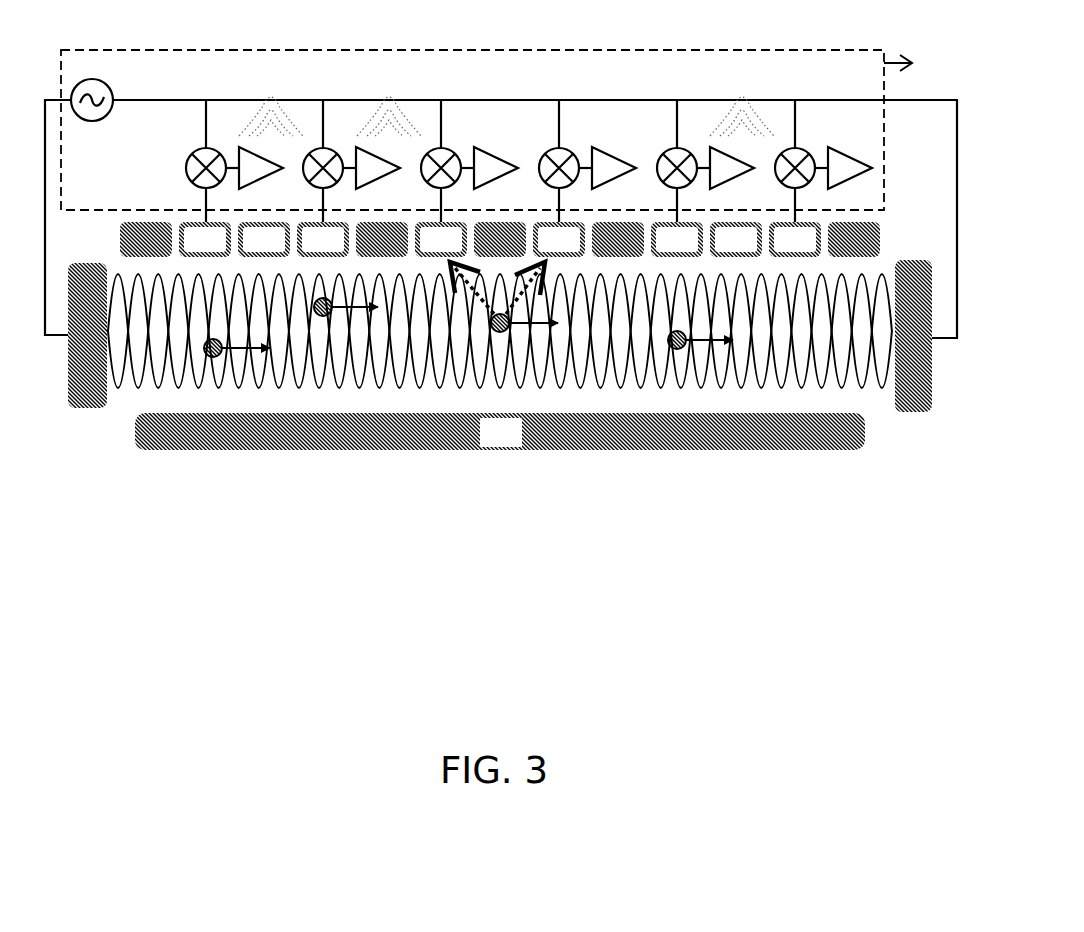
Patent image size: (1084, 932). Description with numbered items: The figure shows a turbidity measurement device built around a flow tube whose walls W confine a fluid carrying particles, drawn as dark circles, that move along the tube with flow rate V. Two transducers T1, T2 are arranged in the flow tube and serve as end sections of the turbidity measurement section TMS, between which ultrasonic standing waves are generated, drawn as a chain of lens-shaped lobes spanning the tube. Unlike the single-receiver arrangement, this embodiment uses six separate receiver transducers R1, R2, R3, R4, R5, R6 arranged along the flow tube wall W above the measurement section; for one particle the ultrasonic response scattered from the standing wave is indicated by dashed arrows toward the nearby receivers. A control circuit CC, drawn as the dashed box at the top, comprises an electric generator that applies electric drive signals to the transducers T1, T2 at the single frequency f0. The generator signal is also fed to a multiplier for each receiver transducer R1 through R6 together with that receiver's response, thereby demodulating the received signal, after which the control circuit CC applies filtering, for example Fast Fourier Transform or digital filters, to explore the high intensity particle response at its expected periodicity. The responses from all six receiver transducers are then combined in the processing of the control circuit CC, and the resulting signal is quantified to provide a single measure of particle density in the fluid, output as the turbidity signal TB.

The control circuit CC is at (785, 50).
The turbidity signal TB is at (920, 68).
The single frequency f0 is at (126, 139).
The receiver transducer R1 is at (205, 239).
The receiver transducer R2 is at (323, 239).
The receiver transducer R3 is at (441, 239).
The receiver transducer R4 is at (559, 239).
The receiver transducer R5 is at (677, 239).
The receiver transducer R6 is at (795, 239).
The wall W is at (500, 336).
The transducer T1 is at (92, 398).
The transducer T2 is at (915, 395).
The turbidity measurement section TMS is at (114, 472).
The flow rate V is at (468, 314).